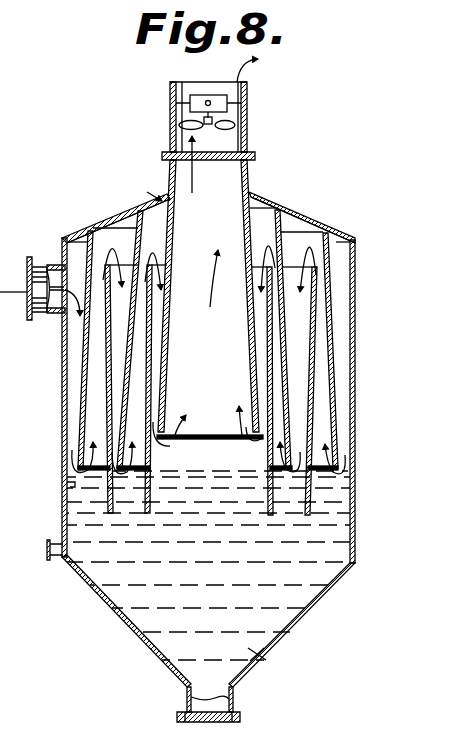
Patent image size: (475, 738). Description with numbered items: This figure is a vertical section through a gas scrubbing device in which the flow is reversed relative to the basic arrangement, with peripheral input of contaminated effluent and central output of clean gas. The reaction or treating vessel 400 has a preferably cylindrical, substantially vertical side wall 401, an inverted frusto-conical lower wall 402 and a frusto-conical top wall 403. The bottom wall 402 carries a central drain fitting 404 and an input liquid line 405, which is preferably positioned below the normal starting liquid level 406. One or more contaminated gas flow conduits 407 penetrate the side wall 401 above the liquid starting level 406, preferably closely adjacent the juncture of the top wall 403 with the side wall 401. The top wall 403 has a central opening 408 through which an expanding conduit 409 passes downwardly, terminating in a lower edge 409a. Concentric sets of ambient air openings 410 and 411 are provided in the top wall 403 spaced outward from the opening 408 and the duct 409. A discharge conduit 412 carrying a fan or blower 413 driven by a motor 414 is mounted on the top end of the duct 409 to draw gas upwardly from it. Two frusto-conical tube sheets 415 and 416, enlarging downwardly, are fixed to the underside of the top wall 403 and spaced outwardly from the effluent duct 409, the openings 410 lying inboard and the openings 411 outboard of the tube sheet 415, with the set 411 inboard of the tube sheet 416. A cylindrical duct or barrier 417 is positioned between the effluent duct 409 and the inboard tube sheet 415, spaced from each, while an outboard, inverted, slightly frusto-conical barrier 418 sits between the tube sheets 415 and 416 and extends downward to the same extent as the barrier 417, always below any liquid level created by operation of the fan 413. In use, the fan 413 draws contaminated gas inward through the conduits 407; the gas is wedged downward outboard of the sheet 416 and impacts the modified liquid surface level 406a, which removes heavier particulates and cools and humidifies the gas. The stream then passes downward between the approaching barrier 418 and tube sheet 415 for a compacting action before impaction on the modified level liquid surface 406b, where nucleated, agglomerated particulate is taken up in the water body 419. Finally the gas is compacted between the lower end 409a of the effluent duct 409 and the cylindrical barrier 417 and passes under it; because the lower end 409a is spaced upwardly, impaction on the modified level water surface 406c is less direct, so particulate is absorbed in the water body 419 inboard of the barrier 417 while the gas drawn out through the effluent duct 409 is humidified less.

The reaction or treating vessel 400 is at (58, 380).
The side wall 401 is at (62, 336).
The inverted frusto-conical lower wall 402 is at (118, 622).
The frusto-conical top wall 403 is at (80, 228).
The central drain fitting 404 is at (186, 693).
The input liquid line 405 is at (65, 565).
The normal starting liquid level 406 is at (58, 477).
The modified liquid surface level 406a is at (67, 486).
The modified level liquid surface 406b is at (134, 469).
The modified level water surface 406c is at (240, 480).
The contaminated gas flow conduit 407 is at (46, 264).
The central opening 408 is at (250, 190).
The expanding conduit 409 is at (176, 212).
The lower edge 409a is at (218, 436).
The ambient air openings 410 is at (168, 192).
The ambient air openings 411 is at (116, 212).
The discharge conduit 412 is at (248, 95).
The fan or blower 413 is at (180, 121).
The motor 414 is at (212, 96).
The inboard frusto-conical tube sheet 415 is at (128, 360).
The outboard frusto-conical tube sheet 416 is at (81, 417).
The cylindrical duct or barrier 417 is at (151, 347).
The outboard inverted slightly frusto-conical barrier or duct 418 is at (307, 512).
The water body 419 is at (258, 653).